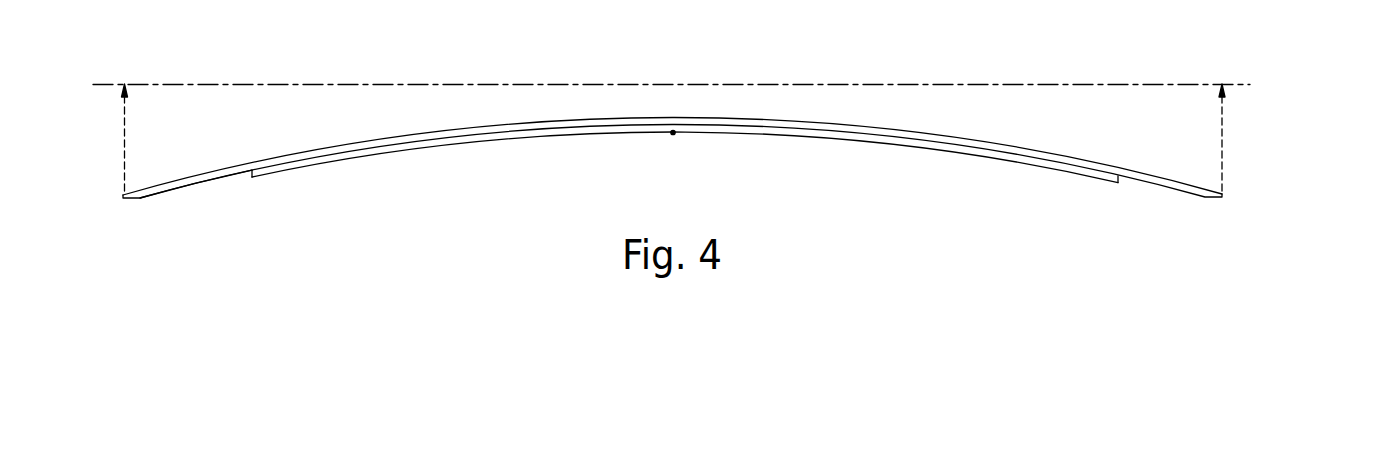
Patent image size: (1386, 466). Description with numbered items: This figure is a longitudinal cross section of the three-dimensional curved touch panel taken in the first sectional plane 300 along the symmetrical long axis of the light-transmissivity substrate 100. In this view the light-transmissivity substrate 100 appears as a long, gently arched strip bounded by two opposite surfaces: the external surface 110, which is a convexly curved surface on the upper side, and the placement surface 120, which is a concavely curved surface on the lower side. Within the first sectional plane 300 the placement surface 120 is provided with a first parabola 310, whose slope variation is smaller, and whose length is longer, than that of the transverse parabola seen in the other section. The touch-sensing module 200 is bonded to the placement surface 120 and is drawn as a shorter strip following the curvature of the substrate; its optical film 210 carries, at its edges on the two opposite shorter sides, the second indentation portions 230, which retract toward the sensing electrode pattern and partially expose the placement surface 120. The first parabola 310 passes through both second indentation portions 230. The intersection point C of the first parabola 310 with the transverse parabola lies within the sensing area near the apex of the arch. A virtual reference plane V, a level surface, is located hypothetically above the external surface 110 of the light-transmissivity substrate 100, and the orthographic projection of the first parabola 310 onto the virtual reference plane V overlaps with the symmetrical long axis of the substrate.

The first sectional plane 300 is at (1302, 48).
The light-transmissivity substrate 100 is at (738, 186).
The external surface 110 is at (1191, 179).
The placement surface 120 is at (707, 190).
The touch-sensing module 200 is at (667, 156).
The optical film 210 is at (888, 145).
The second indentation portions 230 is at (245, 170).
The first parabola 310 is at (203, 182).
The intersection point C is at (675, 134).
The virtual reference plane V is at (671, 67).